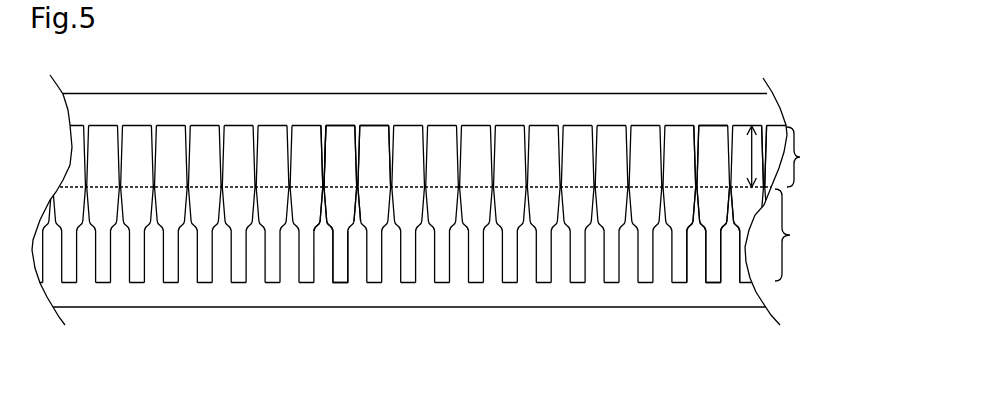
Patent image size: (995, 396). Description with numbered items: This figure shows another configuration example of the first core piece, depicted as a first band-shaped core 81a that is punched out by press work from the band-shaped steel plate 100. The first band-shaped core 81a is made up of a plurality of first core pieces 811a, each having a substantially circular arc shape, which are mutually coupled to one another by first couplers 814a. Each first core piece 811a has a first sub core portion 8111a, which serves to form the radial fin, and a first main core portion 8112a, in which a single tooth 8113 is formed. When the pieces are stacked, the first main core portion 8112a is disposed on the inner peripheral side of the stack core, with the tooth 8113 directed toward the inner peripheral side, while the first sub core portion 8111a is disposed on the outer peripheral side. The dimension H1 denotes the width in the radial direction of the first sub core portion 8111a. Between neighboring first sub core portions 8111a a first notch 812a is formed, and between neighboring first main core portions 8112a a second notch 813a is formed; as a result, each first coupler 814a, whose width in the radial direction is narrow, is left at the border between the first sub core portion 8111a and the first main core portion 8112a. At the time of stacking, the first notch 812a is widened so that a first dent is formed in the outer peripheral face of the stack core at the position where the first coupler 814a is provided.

The band-shaped steel plate 100 is at (628, 93).
The first band-shaped core 81a is at (715, 127).
The first notch 812a is at (323, 123).
The first core piece 811a is at (373, 133).
The first coupler 814a is at (357, 187).
The second notch 813a is at (323, 227).
The tooth 8113 is at (340, 262).
The first sub core portion 8111a is at (821, 157).
The first main core portion 8112a is at (794, 235).
The width in the radial direction of the first sub core portion H1 is at (753, 144).